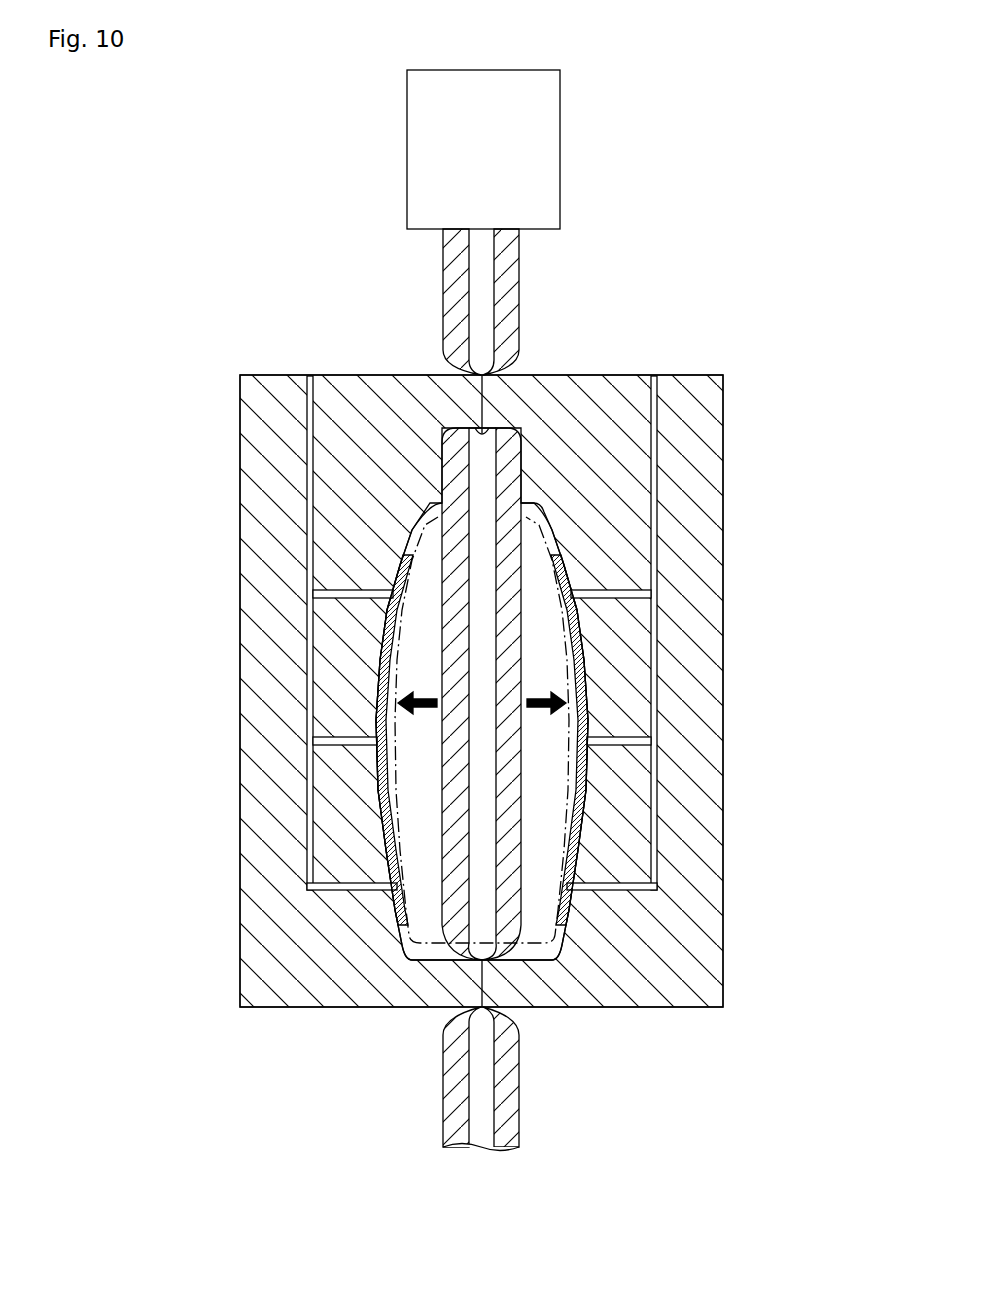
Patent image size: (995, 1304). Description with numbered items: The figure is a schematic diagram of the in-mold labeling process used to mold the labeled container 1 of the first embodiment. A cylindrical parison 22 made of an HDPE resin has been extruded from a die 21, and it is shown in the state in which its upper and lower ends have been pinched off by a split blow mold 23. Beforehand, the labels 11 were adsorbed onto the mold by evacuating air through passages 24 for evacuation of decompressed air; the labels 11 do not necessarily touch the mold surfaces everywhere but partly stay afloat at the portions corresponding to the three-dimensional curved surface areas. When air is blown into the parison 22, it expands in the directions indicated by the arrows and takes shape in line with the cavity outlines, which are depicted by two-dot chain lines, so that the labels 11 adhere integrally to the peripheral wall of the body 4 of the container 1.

The container 1 is at (560, 530).
The body 4 is at (392, 774).
The labels 11 is at (380, 652).
The die 21 is at (513, 153).
The parison 22 is at (510, 607).
The split blow mold 23 is at (285, 922).
The passages for evacuation of decompressed air 24 is at (310, 707).